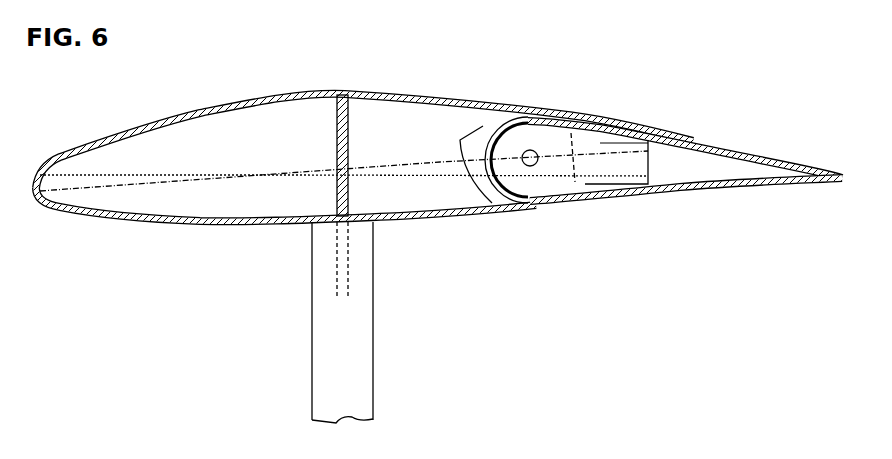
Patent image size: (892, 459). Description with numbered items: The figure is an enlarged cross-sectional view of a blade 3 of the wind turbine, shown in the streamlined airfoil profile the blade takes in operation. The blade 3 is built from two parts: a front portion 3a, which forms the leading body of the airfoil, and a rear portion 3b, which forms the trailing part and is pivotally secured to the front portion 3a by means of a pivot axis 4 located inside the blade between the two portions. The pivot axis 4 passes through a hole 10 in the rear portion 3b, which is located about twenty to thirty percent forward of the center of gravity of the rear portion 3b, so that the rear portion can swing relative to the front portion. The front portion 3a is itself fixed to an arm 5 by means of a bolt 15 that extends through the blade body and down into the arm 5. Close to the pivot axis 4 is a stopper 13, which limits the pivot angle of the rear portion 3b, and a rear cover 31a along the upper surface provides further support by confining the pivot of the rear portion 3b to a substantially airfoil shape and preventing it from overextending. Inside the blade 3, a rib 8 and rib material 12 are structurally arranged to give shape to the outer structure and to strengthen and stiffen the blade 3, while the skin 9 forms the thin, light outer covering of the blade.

The blade 3 is at (168, 315).
The front portion 3a is at (229, 133).
The rear portion 3b is at (672, 182).
The pivot axis 4 is at (522, 166).
The arm 5 is at (373, 358).
The rib 8 is at (405, 191).
The upper skin 9 is at (173, 114).
The hole 10 is at (728, 186).
The rib material 12 is at (582, 181).
The stopper 13 is at (474, 132).
The bolt 15 is at (333, 139).
The rear cover 31a is at (694, 110).